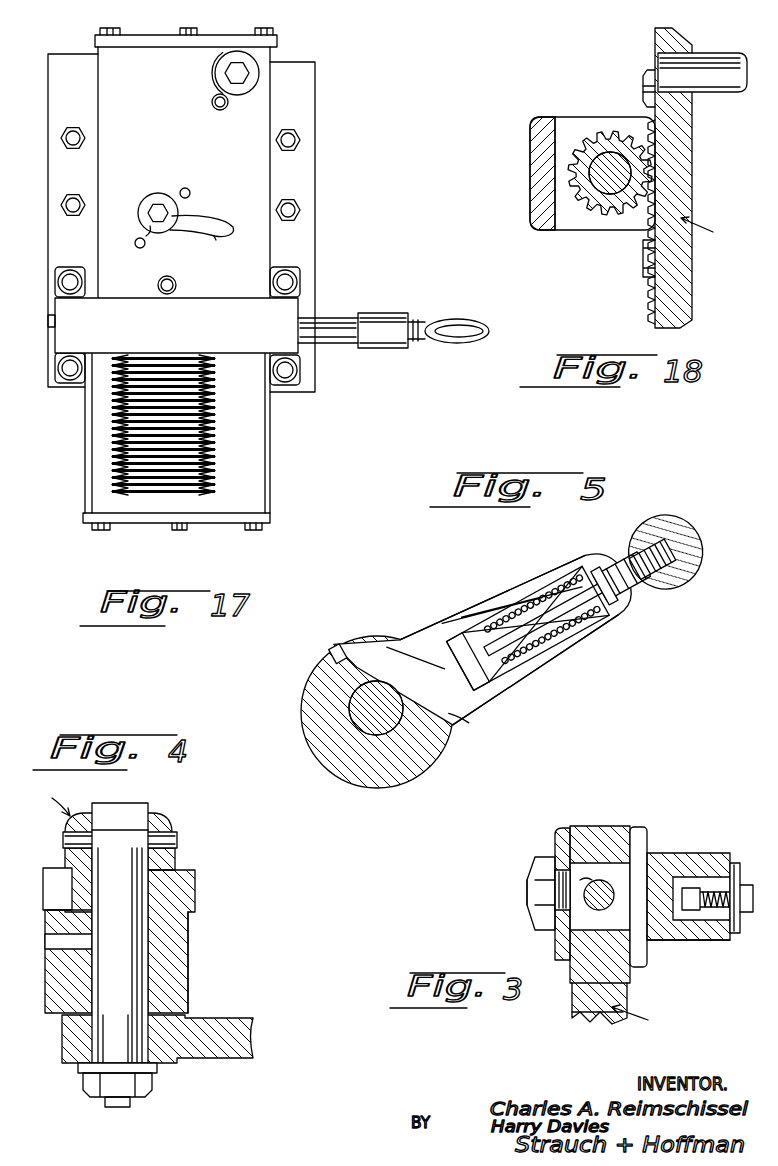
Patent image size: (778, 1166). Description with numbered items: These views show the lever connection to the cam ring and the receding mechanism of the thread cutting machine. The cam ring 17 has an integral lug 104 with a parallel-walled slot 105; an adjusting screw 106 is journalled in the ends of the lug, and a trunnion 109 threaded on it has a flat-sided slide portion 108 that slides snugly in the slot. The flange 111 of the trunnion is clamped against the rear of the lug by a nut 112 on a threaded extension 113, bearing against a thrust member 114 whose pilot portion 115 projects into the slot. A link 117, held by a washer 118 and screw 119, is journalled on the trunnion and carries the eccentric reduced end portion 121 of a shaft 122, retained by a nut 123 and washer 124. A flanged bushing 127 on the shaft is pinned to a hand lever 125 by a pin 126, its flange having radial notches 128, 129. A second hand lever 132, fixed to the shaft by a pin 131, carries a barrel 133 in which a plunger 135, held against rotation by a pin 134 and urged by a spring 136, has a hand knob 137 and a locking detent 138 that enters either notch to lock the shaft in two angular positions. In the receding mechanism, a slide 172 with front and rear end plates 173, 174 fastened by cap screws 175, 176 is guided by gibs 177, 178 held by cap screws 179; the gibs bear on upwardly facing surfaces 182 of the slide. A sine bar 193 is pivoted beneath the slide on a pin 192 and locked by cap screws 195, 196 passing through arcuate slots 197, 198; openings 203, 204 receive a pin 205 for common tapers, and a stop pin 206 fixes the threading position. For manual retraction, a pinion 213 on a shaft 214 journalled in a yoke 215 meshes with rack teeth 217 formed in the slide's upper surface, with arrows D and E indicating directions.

In FIG. 3, the cam ring 17 is at (592, 1012).
In FIG. 3, the lug 104 is at (628, 978).
In FIG. 3, the parallel-walled slot 105 is at (598, 830).
In FIG. 3, the adjusting screw 106 is at (592, 870).
In FIG. 3, the slide portion 108 is at (625, 928).
In FIG. 3, the trunnion 109 is at (660, 868).
In FIG. 3, the flange 111 is at (645, 830).
In FIG. 3, the nut 112 is at (535, 862).
In FIG. 3, the threaded extension 113 is at (527, 890).
In FIG. 3, the thrust member 114 is at (558, 835).
In FIG. 3, the pilot portion 115 is at (562, 920).
In FIG. 4, the link 117 is at (230, 1060).
In FIG. 3, the link 117 is at (706, 942).
In FIG. 3, the washer 118 is at (738, 840).
In FIG. 3, the screw 119 is at (746, 890).
In FIG. 4, the eccentric reduced end portion 121 is at (118, 1022).
In FIG. 4, the shaft 122 is at (133, 941).
In FIG. 4, the nut 123 is at (118, 1108).
In FIG. 4, the washer 124 is at (85, 1068).
In FIG. 4, the hand lever 125 is at (189, 989).
In FIG. 4, the pin 126 is at (46, 943).
In FIG. 4, the flanged bushing 127 is at (160, 920).
In FIG. 5, the radial notch 128 is at (485, 620).
In FIG. 5, the radial notch 129 is at (344, 633).
In FIG. 4, the radial notch 129 is at (50, 868).
In FIG. 4, the pin 131 is at (178, 840).
In FIG. 5, the hand lever 132 is at (522, 650).
In FIG. 4, the hand lever 132 is at (162, 818).
In FIG. 5, the barrel 133 is at (541, 652).
In FIG. 5, the pin 134 is at (597, 563).
In FIG. 5, the plunger 135 is at (530, 598).
In FIG. 5, the spring 136 is at (594, 635).
In FIG. 5, the hand knob 137 is at (649, 538).
In FIG. 5, the locking detent 138 is at (473, 733).
In FIG. 17, the slide 172 is at (255, 453).
In FIG. 18, the slide 172 is at (655, 40).
In FIG. 17, the front end plate 173 is at (205, 523).
In FIG. 17, the rear end plate 174 is at (242, 42).
In FIG. 17, the cap screws 175 is at (254, 530).
In FIG. 17, the cap screws 176 is at (263, 30).
In FIG. 17, the gib 177 is at (302, 318).
In FIG. 17, the gib 178 is at (88, 91).
In FIG. 17, the cap screws 179 is at (63, 203).
In FIG. 18, the cap screws 179 is at (643, 82).
In FIG. 17, the upwardly facing surfaces 182 is at (92, 449).
In FIG. 17, the pin 192 is at (219, 109).
In FIG. 17, the sine bar 193 is at (190, 219).
In FIG. 17, the cap screw 195 is at (160, 205).
In FIG. 17, the cap screw 196 is at (244, 74).
In FIG. 17, the arcuate slot 197 is at (214, 240).
In FIG. 17, the arcuate slot 198 is at (219, 75).
In FIG. 17, the opening 203 is at (135, 244).
In FIG. 17, the opening 204 is at (188, 190).
In FIG. 17, the pin 205 is at (138, 238).
In FIG. 17, the stop pin 206 is at (159, 287).
In FIG. 18, the stop pin 206 is at (708, 80).
In FIG. 18, the pinion 213 is at (606, 212).
In FIG. 18, the shaft 214 is at (606, 156).
In FIG. 17, the yoke 215 is at (257, 340).
In FIG. 18, the yoke 215 is at (530, 167).
In FIG. 17, the rack teeth 217 is at (207, 426).
In FIG. 18, the rack teeth 217 is at (662, 255).
In FIG. 18, the direction arrow D is at (705, 232).
In FIG. 4, the direction arrow E is at (54, 803).
In FIG. 3, the direction arrow E is at (635, 1019).